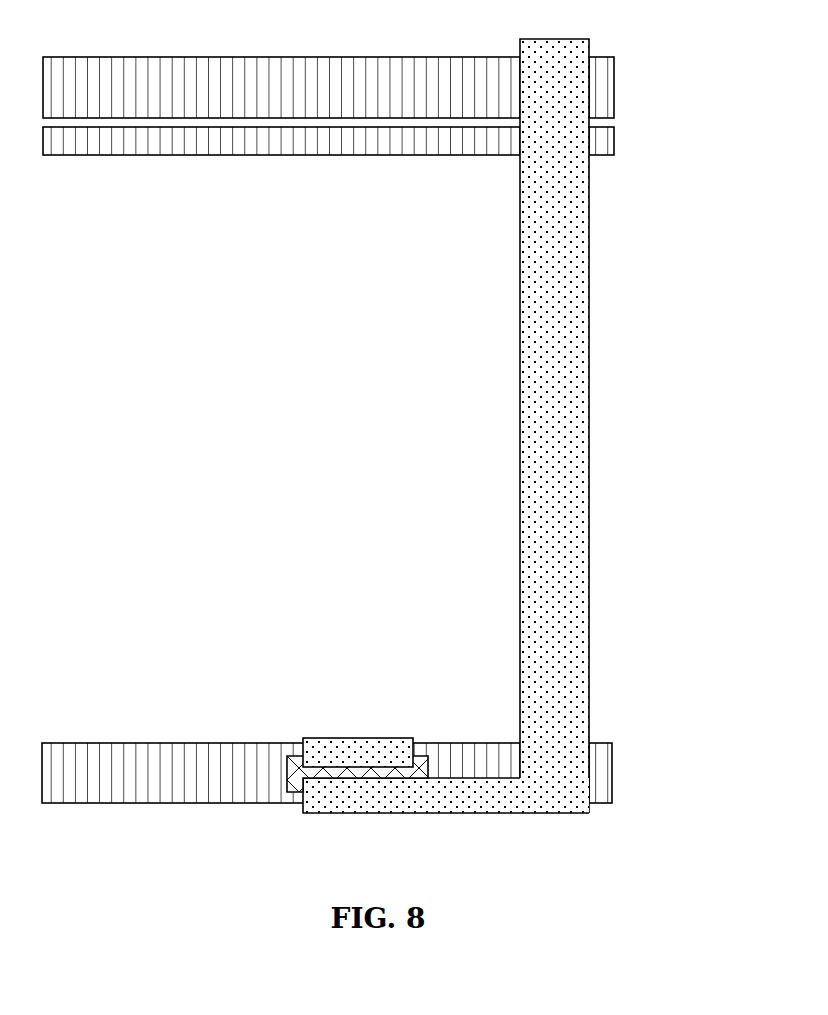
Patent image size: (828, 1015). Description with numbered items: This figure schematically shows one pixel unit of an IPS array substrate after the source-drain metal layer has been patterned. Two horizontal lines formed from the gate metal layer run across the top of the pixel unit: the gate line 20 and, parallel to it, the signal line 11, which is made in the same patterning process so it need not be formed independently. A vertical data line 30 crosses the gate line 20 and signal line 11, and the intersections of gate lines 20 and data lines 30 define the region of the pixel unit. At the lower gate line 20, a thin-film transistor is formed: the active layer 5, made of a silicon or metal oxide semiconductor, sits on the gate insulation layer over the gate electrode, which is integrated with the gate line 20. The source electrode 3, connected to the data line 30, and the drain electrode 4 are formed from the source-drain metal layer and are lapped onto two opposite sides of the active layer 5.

The gate line 20 is at (597, 88).
The signal line 11 is at (597, 142).
The data line 30 is at (565, 258).
The source electrode 3 is at (372, 792).
The drain electrode 4 is at (330, 752).
The active layer 5 is at (297, 782).